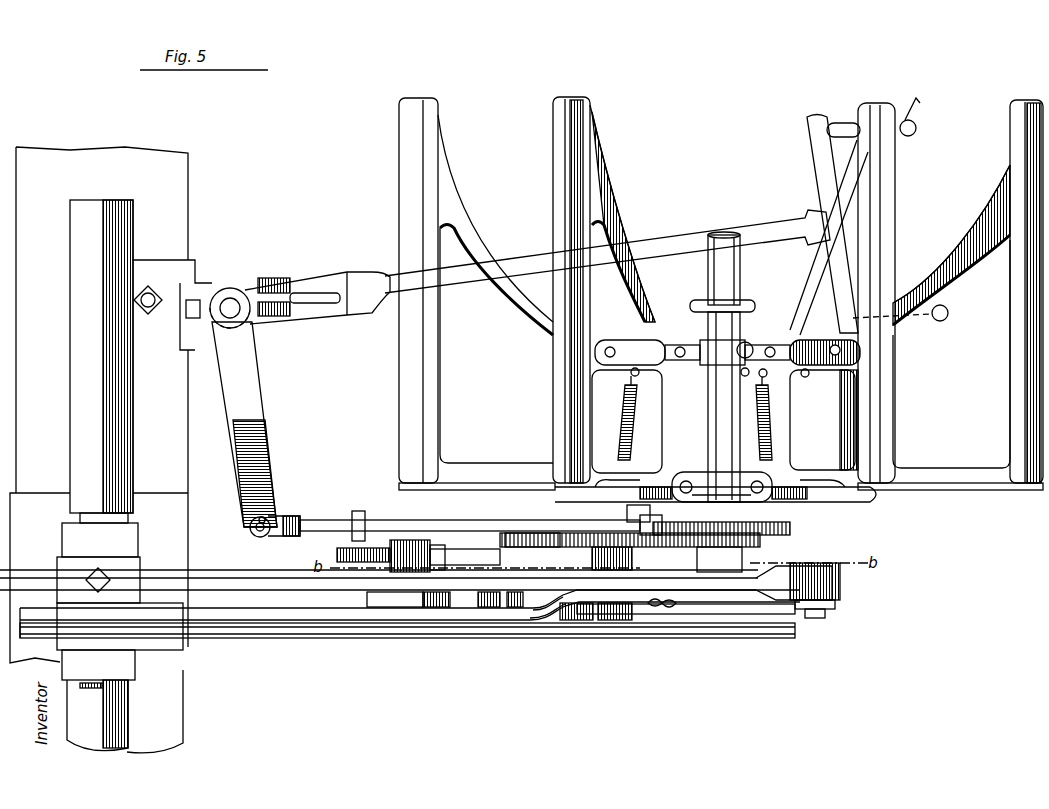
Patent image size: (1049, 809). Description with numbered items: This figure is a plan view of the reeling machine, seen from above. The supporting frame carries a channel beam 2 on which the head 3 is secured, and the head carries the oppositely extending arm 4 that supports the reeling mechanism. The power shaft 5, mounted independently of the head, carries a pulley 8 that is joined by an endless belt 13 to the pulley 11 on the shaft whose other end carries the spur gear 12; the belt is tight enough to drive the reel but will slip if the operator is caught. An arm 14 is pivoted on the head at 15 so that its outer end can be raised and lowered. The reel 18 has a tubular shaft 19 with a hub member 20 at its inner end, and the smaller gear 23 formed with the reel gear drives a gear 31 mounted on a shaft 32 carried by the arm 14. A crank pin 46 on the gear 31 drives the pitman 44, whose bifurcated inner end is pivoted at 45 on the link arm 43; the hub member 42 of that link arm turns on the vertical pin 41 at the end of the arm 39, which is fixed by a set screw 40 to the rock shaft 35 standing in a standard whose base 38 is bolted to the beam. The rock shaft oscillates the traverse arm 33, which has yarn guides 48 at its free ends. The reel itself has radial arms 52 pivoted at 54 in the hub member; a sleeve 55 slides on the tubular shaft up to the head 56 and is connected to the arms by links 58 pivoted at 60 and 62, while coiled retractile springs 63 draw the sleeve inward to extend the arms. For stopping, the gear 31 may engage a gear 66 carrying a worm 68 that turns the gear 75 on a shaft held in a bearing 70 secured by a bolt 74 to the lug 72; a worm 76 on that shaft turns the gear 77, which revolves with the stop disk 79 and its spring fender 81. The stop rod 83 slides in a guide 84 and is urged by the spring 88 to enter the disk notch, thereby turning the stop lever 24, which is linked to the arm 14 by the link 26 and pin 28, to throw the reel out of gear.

The channel beam 2 is at (157, 158).
The head 3 is at (30, 580).
The arm 4 is at (312, 585).
The power shaft 5 is at (120, 441).
The pulley 8 is at (172, 640).
The pulley 11 is at (782, 640).
The spur gear 12 is at (790, 528).
The endless belt 13 is at (540, 617).
The arm 14 is at (390, 622).
The pivot 15 is at (118, 515).
The reel 18 is at (967, 484).
The tubular shaft 19 is at (715, 412).
The hub member 20 is at (710, 486).
The gear 23 is at (762, 545).
The stop lever 24 is at (838, 605).
The link 26 is at (840, 587).
The pin 28 is at (820, 614).
The gear 31 is at (663, 547).
The shaft 32 is at (616, 620).
The traverse arm 33 is at (520, 264).
The rock shaft 35 is at (232, 306).
The base 38 is at (168, 275).
The arm 39 is at (256, 402).
The set screw 40 is at (195, 322).
The vertical pin 41 is at (250, 535).
The hub member 42 is at (265, 517).
The link arm 43 is at (287, 537).
The pitman 44 is at (500, 527).
The pivot 45 is at (290, 512).
The crank pin 46 is at (625, 509).
The guide 48 is at (917, 128).
The radial arm 52 is at (470, 468).
The pivot 54 is at (620, 487).
The sleeve 55 is at (713, 323).
The head 56 is at (722, 234).
The link 58 is at (805, 342).
The pivot 60 is at (748, 346).
The pivot 62 is at (673, 353).
The coiled retractile spring 63 is at (630, 428).
The gear 66 is at (523, 530).
The worm 68 is at (602, 572).
The bearing 70 is at (460, 553).
The lug 72 is at (800, 568).
The bolt 74 is at (490, 608).
The gear 75 is at (567, 527).
The worm 76 is at (407, 540).
The gear 77 is at (345, 555).
The stop disk 79 is at (420, 608).
The spring fender 81 is at (438, 608).
The stop rod 83 is at (790, 612).
The guide 84 is at (516, 608).
The spring 88 is at (580, 620).